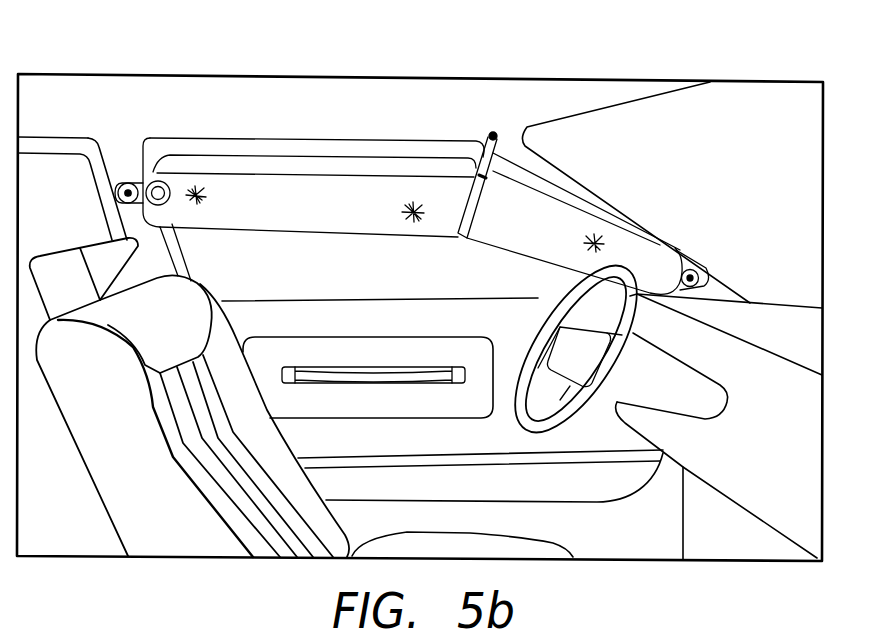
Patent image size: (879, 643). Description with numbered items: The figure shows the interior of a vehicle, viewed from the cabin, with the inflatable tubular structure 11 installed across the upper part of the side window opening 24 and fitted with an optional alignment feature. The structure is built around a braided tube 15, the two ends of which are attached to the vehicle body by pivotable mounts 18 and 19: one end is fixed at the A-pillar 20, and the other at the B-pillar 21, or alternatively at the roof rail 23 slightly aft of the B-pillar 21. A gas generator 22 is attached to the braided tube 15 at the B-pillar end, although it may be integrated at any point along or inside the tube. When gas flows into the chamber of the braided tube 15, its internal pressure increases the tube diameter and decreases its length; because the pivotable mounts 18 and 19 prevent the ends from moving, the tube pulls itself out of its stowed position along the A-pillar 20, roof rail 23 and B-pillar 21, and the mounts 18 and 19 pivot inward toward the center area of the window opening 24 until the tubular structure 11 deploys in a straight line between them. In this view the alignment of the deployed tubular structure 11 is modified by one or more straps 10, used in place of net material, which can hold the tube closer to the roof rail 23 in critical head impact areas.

The strap 10 is at (488, 160).
The inflatable tubular structure 11 is at (435, 169).
The braided tube 15 is at (277, 185).
The pivotable mount 18 is at (698, 261).
The pivotable mount 19 is at (117, 175).
The A-pillar 20 is at (587, 198).
The B-pillar 21 is at (128, 212).
The gas generator 22 is at (151, 171).
The roof rail 23 is at (187, 110).
The window opening 24 is at (357, 167).